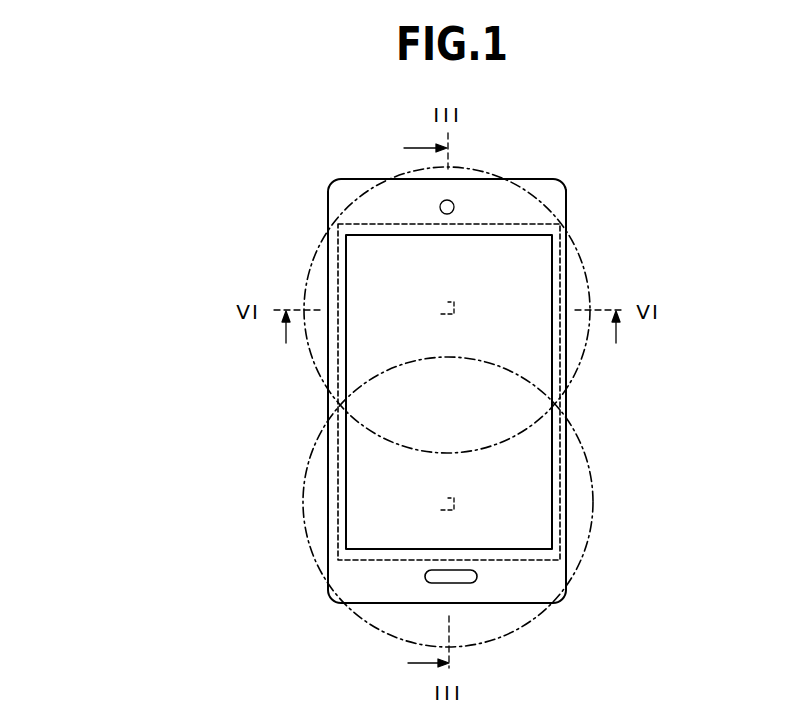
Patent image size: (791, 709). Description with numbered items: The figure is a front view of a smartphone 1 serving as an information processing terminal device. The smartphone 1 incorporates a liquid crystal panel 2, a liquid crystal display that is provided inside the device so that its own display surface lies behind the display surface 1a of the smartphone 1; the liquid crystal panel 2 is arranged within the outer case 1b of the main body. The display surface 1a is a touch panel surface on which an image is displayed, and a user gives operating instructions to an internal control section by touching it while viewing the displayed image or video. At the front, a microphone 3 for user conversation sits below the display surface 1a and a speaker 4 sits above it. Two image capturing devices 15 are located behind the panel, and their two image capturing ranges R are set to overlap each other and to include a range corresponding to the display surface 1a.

The smartphone 1 is at (664, 293).
The display surface 1a is at (532, 358).
The outer case 1b is at (566, 198).
The liquid crystal panel 2 is at (562, 470).
The microphone 3 is at (457, 583).
The speaker 4 is at (452, 201).
The image capturing devices 15 is at (443, 308).
The image capturing ranges R is at (586, 276).